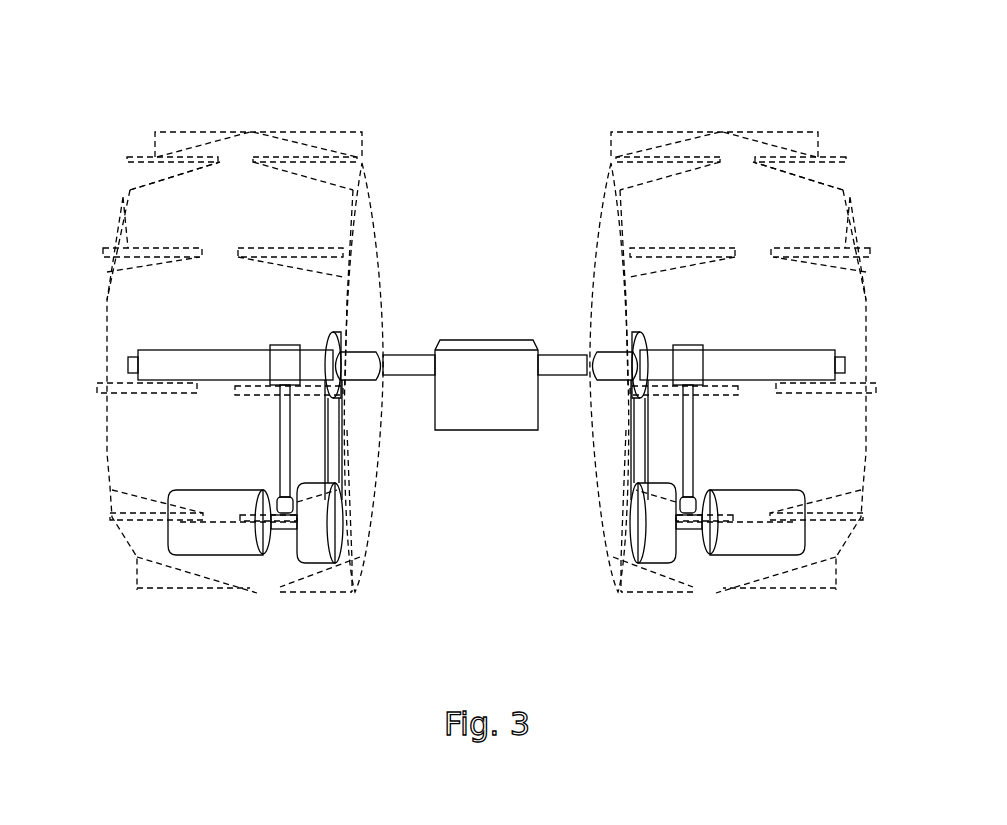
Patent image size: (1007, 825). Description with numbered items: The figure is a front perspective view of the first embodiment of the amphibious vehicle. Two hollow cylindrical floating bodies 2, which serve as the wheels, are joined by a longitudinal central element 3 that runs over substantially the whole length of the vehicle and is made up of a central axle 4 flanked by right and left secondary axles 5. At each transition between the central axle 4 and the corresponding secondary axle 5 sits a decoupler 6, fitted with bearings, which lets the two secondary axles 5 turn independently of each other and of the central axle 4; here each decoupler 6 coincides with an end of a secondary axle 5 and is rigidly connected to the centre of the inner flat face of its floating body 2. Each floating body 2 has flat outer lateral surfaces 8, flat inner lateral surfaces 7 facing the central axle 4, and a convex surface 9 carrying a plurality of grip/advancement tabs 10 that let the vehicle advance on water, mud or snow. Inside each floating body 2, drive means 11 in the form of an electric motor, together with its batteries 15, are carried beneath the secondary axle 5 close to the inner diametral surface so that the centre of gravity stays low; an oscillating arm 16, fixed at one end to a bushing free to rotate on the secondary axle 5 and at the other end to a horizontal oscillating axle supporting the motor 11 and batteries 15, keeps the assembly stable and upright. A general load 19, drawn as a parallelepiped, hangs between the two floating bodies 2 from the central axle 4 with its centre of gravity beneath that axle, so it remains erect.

The floating body 2 is at (117, 190).
The longitudinal central element 3 is at (487, 387).
The central axle 4 is at (560, 377).
The secondary axle 5 is at (200, 360).
The decoupler 6 is at (583, 352).
The inner lateral surface 7 is at (365, 208).
The outer lateral surface 8 is at (485, 391).
The convex surface 9 is at (253, 132).
The grip/advancement tab 10 is at (484, 345).
The drive means 11 is at (653, 643).
The battery 15 is at (193, 556).
The oscillating arm 16 is at (280, 432).
The load 19 is at (474, 340).